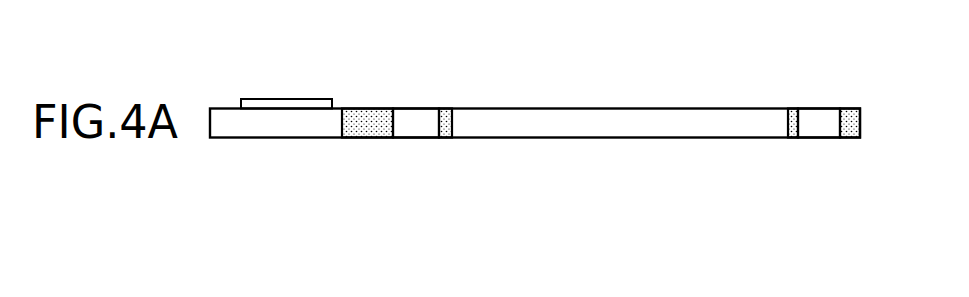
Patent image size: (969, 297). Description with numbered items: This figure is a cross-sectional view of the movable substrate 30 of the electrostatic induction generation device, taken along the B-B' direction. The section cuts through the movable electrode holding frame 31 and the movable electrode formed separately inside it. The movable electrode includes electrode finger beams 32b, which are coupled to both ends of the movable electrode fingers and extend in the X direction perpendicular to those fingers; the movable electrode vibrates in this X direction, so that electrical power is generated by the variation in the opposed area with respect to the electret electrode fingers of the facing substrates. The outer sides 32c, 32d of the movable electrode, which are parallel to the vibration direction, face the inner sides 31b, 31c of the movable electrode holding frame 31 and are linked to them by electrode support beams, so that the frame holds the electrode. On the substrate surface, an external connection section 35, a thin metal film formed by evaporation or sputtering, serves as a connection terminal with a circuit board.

The movable substrate 30 is at (274, 126).
The movable electrode holding frame 31 is at (364, 126).
The inner side of movable electrode holding frame 31b is at (395, 123).
The inner side of movable electrode holding frame 31c is at (837, 123).
The electrode finger beam 32b is at (448, 122).
The outer side of movable electrode 32c is at (436, 123).
The outer side of movable electrode 32d is at (803, 123).
The external connection section 35 is at (290, 107).